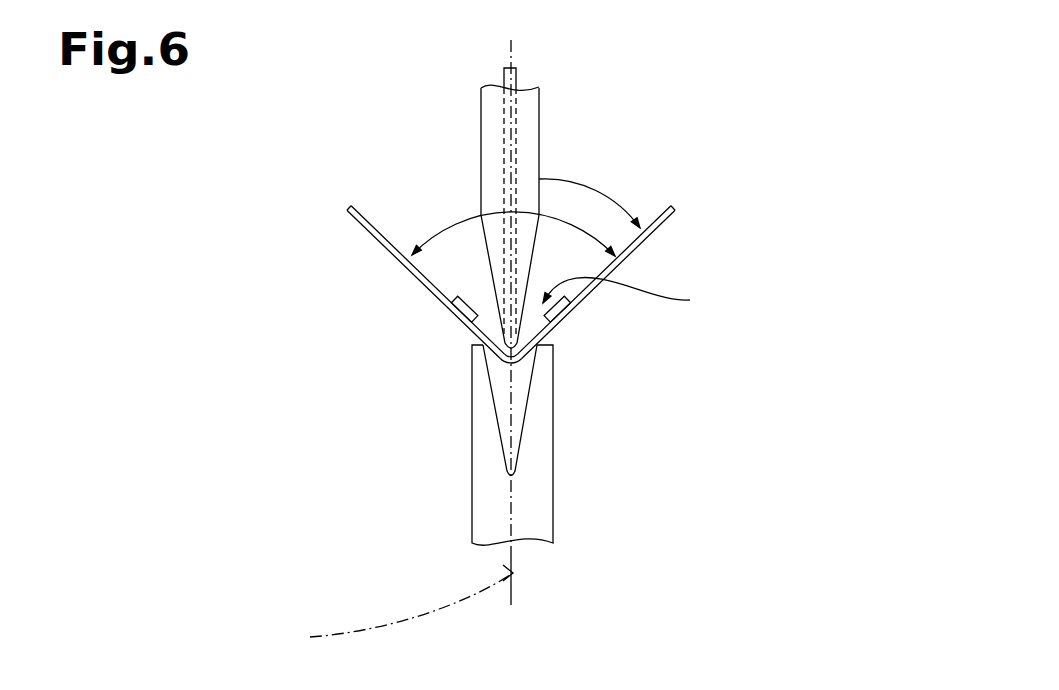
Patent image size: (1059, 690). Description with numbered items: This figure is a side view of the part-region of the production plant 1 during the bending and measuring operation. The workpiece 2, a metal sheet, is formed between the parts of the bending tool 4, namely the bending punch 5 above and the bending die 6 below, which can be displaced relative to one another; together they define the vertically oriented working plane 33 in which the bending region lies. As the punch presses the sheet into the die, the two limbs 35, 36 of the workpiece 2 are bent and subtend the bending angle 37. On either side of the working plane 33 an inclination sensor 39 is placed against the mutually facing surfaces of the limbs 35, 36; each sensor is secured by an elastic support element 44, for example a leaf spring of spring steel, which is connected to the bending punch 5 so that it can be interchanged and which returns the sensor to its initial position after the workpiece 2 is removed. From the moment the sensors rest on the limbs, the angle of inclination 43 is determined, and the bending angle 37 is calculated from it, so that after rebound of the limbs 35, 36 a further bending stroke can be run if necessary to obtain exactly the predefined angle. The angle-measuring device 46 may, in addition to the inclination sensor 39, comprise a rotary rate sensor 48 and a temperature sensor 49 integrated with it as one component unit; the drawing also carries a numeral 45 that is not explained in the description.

The production plant 1 is at (556, 335).
The workpiece 2 is at (507, 292).
The bending tool 4 is at (332, 322).
The bending punch 5 is at (570, 182).
The bending die 6 is at (519, 450).
The working plane 33 is at (397, 347).
The limb 35 is at (652, 230).
The limb 36 is at (383, 244).
The bending angle 37 is at (474, 220).
The inclination sensor 39 is at (527, 355).
The angle of inclination 43 is at (602, 200).
The support element 44 is at (480, 337).
The slot in punch 45 is at (515, 78).
The angle-measuring device 46 is at (632, 295).
The rotary rate sensor 48 is at (527, 355).
The temperature sensor 49 is at (463, 313).